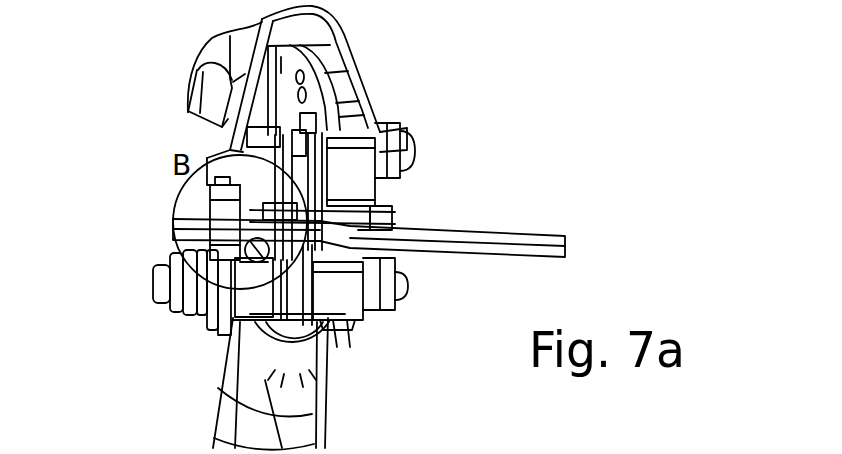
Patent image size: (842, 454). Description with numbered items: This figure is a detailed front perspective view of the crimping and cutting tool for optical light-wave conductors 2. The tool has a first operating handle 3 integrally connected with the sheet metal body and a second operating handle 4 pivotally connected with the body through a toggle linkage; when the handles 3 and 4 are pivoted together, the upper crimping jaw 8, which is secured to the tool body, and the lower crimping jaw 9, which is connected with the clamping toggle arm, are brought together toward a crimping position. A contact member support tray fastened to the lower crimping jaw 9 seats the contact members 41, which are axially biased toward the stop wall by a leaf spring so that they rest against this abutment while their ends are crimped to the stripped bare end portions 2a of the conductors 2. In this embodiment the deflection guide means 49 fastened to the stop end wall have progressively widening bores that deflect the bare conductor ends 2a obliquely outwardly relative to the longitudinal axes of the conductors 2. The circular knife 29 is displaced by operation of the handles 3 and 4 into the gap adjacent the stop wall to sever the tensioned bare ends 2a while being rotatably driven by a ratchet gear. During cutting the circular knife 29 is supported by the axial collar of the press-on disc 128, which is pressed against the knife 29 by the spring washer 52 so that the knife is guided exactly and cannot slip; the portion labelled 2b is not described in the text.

The light-wave conductor 2 is at (502, 247).
The stripped bare end portion 2a is at (196, 217).
The shaft second portion 2b is at (200, 230).
The first operating handle 3 is at (203, 60).
The second operating handle 4 is at (310, 403).
The upper crimping jaw 8 is at (347, 177).
The lower crimping jaw 9 is at (345, 295).
The circular knife 29 is at (222, 338).
The contact member 41 is at (382, 211).
The deflection guide means 49 is at (207, 158).
The spring washer 52 is at (185, 272).
The press-on disc 128 is at (203, 315).